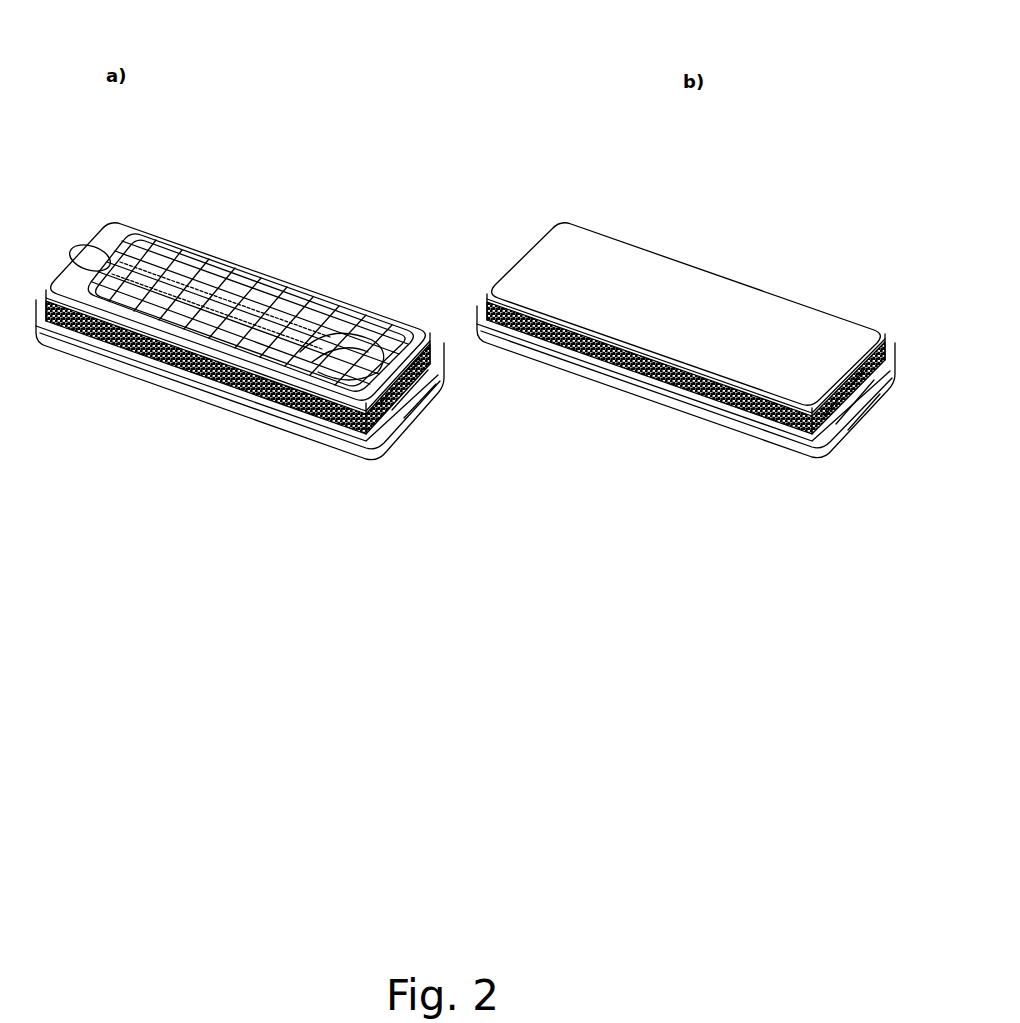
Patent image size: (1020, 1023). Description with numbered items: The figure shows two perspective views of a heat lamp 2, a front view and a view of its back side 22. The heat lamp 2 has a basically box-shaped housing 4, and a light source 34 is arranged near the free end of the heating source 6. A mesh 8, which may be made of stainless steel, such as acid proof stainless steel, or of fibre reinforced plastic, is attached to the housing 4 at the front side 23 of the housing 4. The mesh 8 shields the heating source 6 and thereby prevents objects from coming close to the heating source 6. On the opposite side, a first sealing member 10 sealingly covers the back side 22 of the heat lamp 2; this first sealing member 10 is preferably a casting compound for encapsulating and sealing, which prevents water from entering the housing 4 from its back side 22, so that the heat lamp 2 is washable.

The heat lamp 2 is at (342, 266).
The housing 4 is at (57, 318).
The heating source 6 is at (268, 355).
The mesh 8 is at (335, 360).
The first sealing member 10 is at (775, 368).
The back side 22 is at (608, 381).
The front side 23 is at (184, 358).
The light source 34 is at (90, 258).